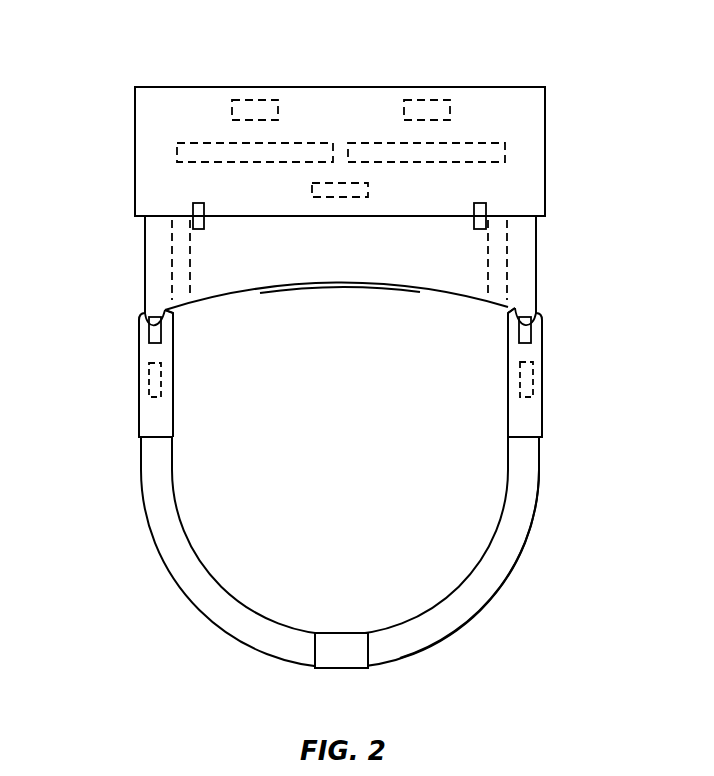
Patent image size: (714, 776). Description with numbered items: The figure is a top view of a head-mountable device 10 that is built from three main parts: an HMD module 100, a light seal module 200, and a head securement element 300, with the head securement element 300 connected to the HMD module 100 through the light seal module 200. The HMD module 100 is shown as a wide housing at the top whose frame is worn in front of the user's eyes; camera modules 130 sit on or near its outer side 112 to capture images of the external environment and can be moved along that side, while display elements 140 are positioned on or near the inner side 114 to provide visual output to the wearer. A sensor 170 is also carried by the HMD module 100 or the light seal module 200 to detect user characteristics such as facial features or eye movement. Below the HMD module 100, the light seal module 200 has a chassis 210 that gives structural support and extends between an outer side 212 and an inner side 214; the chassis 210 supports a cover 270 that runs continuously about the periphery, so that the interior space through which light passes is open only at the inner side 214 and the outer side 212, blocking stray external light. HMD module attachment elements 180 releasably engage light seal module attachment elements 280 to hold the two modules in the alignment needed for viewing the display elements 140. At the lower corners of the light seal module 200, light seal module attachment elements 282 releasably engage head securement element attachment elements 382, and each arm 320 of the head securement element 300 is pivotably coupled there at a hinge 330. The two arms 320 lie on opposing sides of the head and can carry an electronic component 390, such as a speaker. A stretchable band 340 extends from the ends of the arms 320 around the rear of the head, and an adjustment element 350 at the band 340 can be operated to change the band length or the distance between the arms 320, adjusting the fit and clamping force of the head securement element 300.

The head-mountable device 10 is at (121, 70).
The HMD module 100 is at (135, 88).
The outer side 112 is at (528, 87).
The inner side 114 is at (545, 217).
The camera module 130 is at (258, 100).
The display element 140 is at (313, 143).
The sensor 170 is at (345, 197).
The HMD module attachment element 180 is at (204, 213).
The light seal module 200 is at (145, 228).
The chassis 210 is at (172, 272).
The outer side 212 is at (517, 213).
The inner side 214 is at (300, 290).
The cover 270 is at (393, 284).
The light seal module attachment element 280 is at (204, 222).
The light seal module attachment element 282 is at (167, 322).
The head securement element 300 is at (141, 470).
The arm 320 is at (152, 352).
The hinge 330 is at (152, 316).
The band 340 is at (467, 606).
The adjustment element 350 is at (340, 650).
The head securement element attachment element 382 is at (162, 334).
The electronic component 390 is at (150, 385).